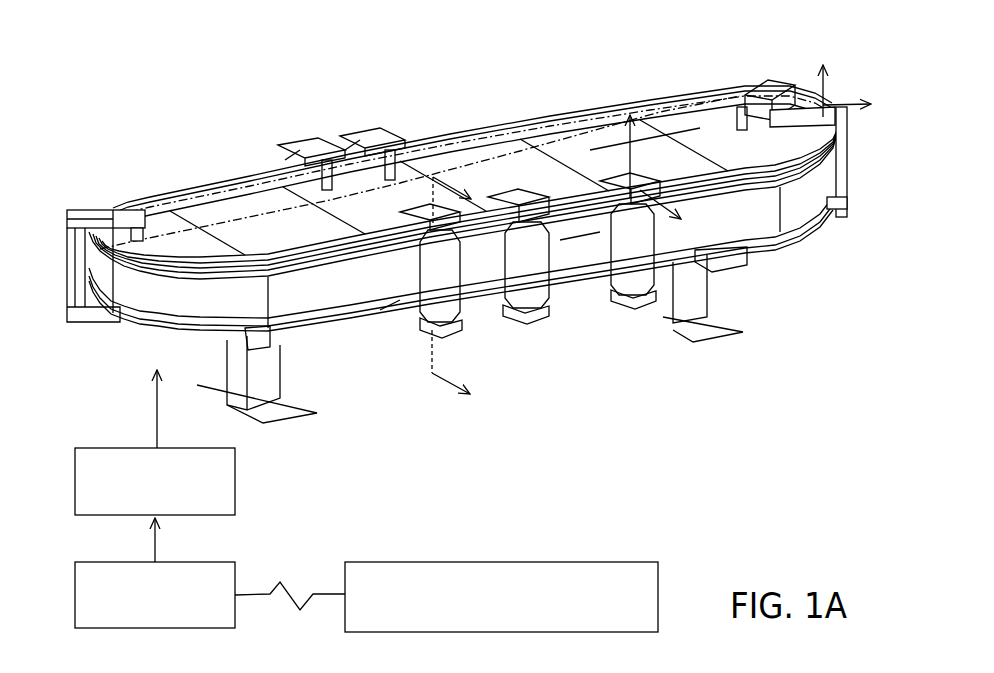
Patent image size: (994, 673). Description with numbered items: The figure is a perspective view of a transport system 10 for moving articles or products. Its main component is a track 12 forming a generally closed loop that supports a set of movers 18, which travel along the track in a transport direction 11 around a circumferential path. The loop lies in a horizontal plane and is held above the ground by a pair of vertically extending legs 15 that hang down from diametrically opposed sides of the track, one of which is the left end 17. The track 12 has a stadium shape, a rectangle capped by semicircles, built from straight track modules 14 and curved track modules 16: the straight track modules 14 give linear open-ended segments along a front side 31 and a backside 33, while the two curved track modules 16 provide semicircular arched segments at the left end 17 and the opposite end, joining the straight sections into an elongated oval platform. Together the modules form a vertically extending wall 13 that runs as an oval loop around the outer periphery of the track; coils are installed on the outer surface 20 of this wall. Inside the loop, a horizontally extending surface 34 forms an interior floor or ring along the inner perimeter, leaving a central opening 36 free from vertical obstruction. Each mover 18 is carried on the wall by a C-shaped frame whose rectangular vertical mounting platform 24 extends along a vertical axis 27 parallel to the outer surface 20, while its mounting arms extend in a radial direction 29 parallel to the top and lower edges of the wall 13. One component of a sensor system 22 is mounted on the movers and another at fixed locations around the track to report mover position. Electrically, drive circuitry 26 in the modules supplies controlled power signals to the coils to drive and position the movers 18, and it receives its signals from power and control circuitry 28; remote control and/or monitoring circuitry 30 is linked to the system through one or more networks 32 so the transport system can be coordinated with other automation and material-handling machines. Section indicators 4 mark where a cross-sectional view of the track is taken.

The transport system 10 is at (736, 42).
The transport direction 11 is at (112, 180).
The track 12 is at (212, 300).
The vertically extending wall 13 is at (567, 255).
The straight track modules 14 is at (390, 278).
The legs 15 is at (268, 386).
The curved track modules 16 is at (139, 300).
The left end 17 is at (50, 234).
The movers 18 is at (292, 144).
The outer surface 20 is at (317, 294).
The sensor system 22 is at (735, 112).
The mounting platform 24 is at (426, 307).
The drive circuitry 26 is at (237, 478).
The vertical axis 27 is at (632, 152).
The power and control circuitry 28 is at (237, 577).
The radial direction 29 is at (657, 192).
The remote control and/or monitoring circuitry 30 is at (658, 603).
The front side 31 is at (549, 387).
The networks 32 is at (327, 598).
The backside 33 is at (401, 101).
The horizontally extending surface 34 is at (231, 215).
The central opening 36 is at (583, 175).
The section line 4- 4 is at (458, 282).